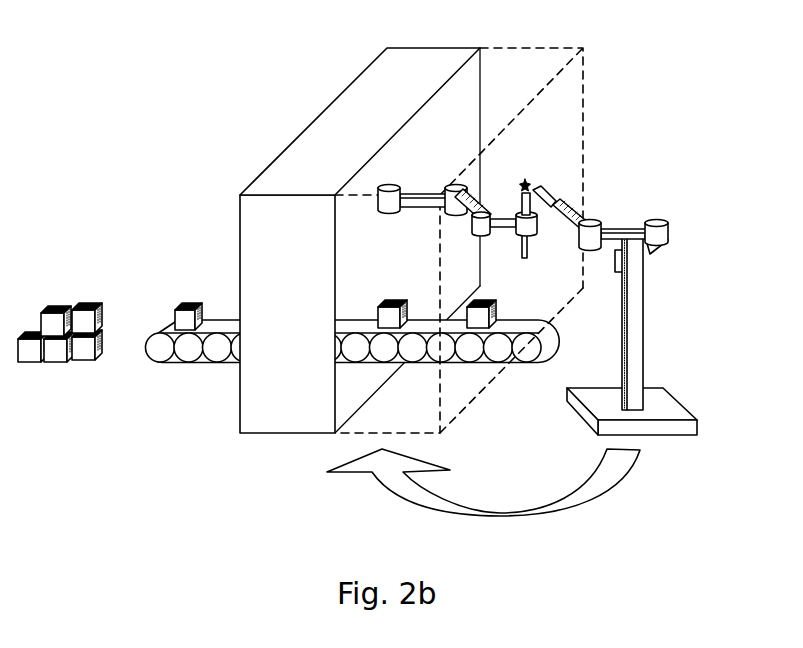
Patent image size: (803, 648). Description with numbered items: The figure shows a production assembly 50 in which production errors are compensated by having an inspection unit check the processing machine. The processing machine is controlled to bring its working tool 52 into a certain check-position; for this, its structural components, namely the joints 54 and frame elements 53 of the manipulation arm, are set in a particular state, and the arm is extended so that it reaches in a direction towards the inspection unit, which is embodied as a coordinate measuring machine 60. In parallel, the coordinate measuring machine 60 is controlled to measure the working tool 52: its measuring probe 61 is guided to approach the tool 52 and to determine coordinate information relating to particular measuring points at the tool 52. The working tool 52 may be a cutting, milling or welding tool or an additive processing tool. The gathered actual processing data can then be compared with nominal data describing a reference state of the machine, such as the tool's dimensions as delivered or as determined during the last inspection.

The production assembly 50 is at (165, 101).
The working tool 52 is at (528, 185).
The frame elements 53 is at (483, 196).
The joints 54 is at (464, 190).
The coordinate measuring machine 60 is at (637, 300).
The measuring probe 61 is at (548, 193).